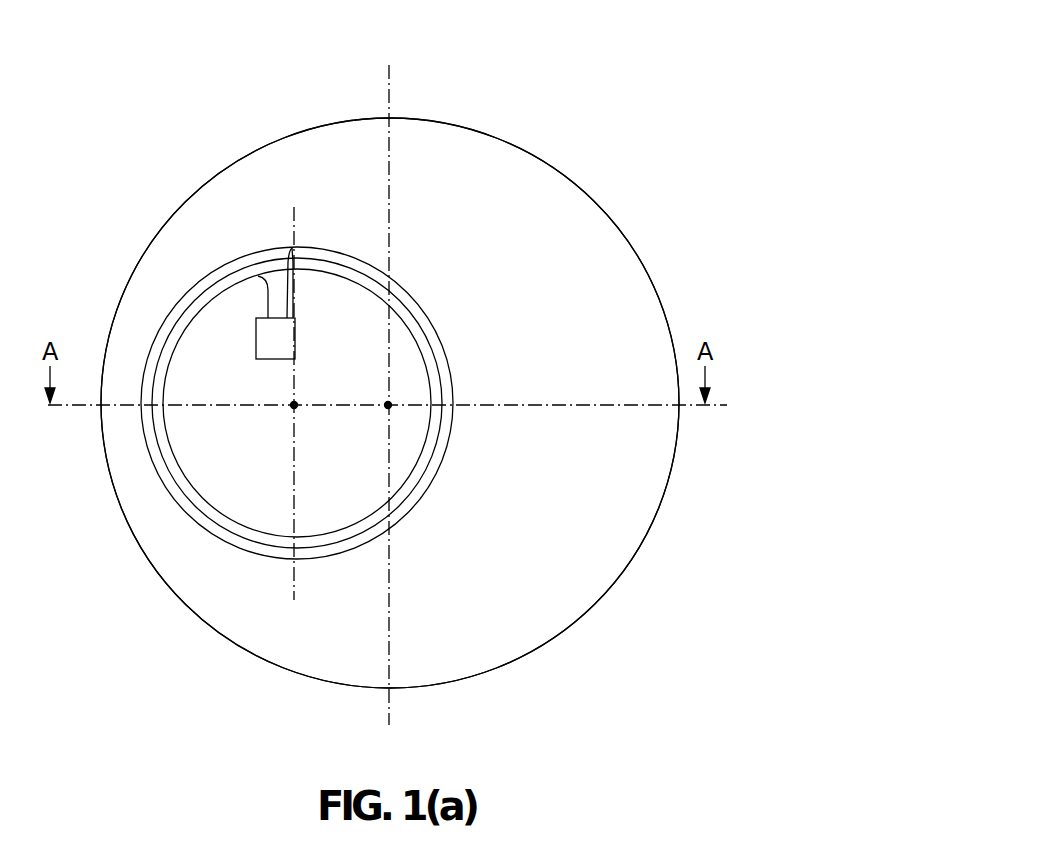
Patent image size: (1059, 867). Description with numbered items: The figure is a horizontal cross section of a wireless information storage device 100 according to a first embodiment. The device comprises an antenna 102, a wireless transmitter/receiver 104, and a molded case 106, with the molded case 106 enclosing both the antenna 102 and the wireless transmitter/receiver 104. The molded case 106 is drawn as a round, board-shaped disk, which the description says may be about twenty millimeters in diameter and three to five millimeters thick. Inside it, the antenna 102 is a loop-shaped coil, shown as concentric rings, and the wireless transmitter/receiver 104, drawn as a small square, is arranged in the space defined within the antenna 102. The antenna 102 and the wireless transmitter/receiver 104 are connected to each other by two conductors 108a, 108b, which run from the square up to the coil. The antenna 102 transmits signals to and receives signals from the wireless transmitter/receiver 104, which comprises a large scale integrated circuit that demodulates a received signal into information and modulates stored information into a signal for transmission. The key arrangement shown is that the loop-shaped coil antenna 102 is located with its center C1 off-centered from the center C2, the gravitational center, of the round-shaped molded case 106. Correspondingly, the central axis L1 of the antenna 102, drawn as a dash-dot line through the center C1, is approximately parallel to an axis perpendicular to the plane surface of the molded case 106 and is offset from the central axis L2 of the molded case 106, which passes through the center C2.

The wireless information storage device 100 is at (480, 114).
The antenna 102 is at (425, 330).
The wireless transmitter/receiver 104 is at (277, 362).
The molded case 106 is at (518, 633).
The conductor 108a is at (263, 290).
The conductor 108b is at (294, 293).
The center of antenna C1 is at (294, 408).
The center of molded case C2 is at (388, 408).
The central axis of antenna L1 is at (294, 565).
The central axis of molded case L2 is at (389, 692).